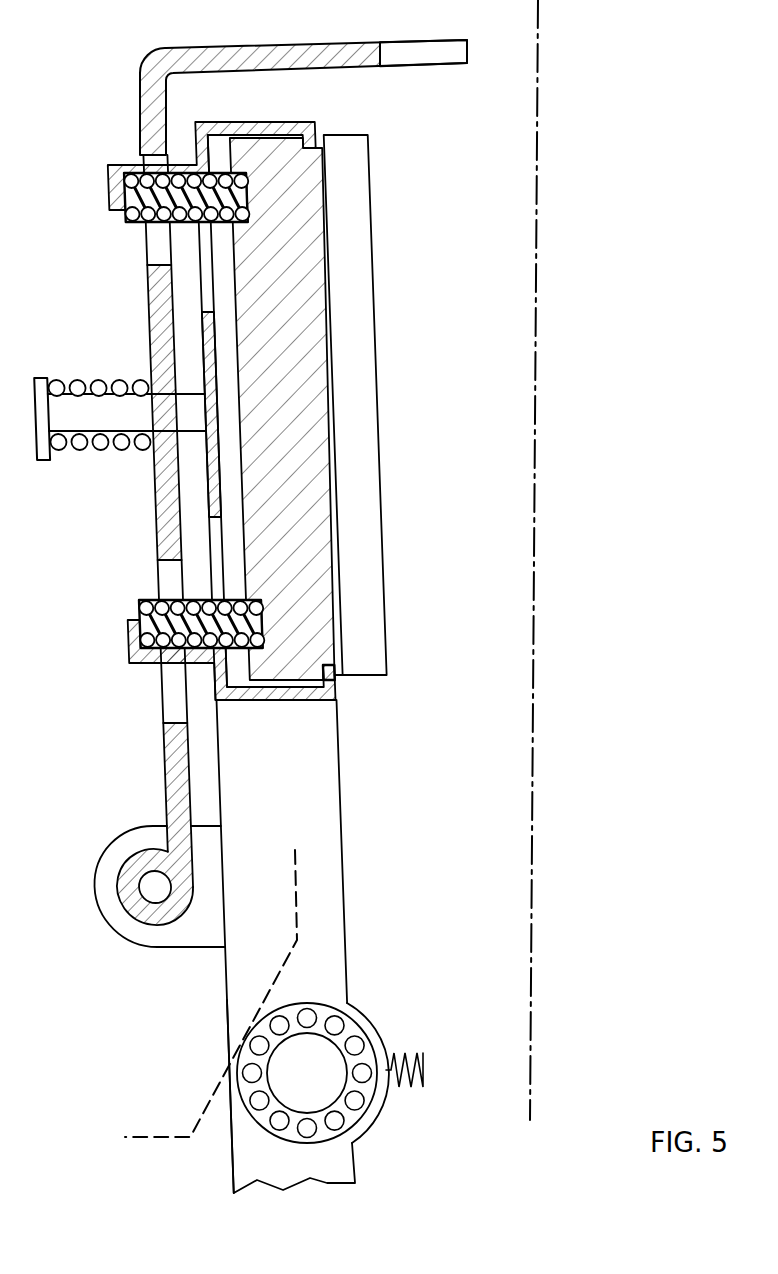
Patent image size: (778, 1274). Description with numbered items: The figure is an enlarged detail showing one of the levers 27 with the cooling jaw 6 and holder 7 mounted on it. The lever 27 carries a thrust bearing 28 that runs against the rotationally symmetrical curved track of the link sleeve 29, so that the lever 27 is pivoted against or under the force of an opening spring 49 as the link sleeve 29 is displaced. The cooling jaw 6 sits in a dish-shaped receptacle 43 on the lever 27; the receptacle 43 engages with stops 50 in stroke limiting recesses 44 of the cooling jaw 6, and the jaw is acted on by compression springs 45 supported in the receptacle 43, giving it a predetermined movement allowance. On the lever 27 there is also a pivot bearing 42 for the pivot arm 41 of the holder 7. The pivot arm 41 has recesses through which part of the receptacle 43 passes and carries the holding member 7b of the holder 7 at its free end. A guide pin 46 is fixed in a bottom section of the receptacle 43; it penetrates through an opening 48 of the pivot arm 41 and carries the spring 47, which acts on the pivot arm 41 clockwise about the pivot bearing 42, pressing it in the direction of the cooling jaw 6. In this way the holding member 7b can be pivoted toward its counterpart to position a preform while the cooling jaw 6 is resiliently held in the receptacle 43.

The cooling jaw 6 is at (334, 553).
The holder 7 is at (313, 47).
The holding member 7b is at (392, 38).
The lever 27 is at (326, 889).
The thrust bearing 28 is at (358, 1026).
The link sleeve 29 is at (240, 1020).
The pivot arm 41 is at (170, 713).
The pivot bearing 42 is at (152, 888).
The dish-shaped receptacle 43 is at (281, 697).
The stroke limiting recess 44 is at (350, 656).
The compression spring 45 is at (182, 603).
The guide pin 46 is at (90, 430).
The spring 47 is at (57, 458).
The opening 48 is at (160, 447).
The opening spring 49 is at (270, 996).
The stop 50 is at (333, 664).